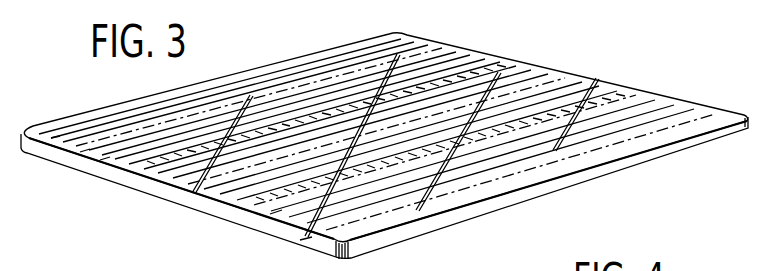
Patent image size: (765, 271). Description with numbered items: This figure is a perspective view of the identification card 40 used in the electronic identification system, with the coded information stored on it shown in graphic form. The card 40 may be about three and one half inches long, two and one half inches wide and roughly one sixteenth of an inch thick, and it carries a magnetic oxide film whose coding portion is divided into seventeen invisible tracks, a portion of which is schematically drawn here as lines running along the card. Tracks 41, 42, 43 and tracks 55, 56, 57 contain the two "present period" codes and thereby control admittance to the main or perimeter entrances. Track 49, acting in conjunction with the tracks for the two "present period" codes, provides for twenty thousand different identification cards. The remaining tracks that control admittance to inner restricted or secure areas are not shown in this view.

The card 40 is at (570, 43).
The track 41 is at (42, 140).
The track 42 is at (80, 152).
The track 43 is at (100, 160).
The track 49 is at (183, 189).
The track 55 is at (270, 214).
The track 56 is at (287, 226).
The track 57 is at (305, 243).